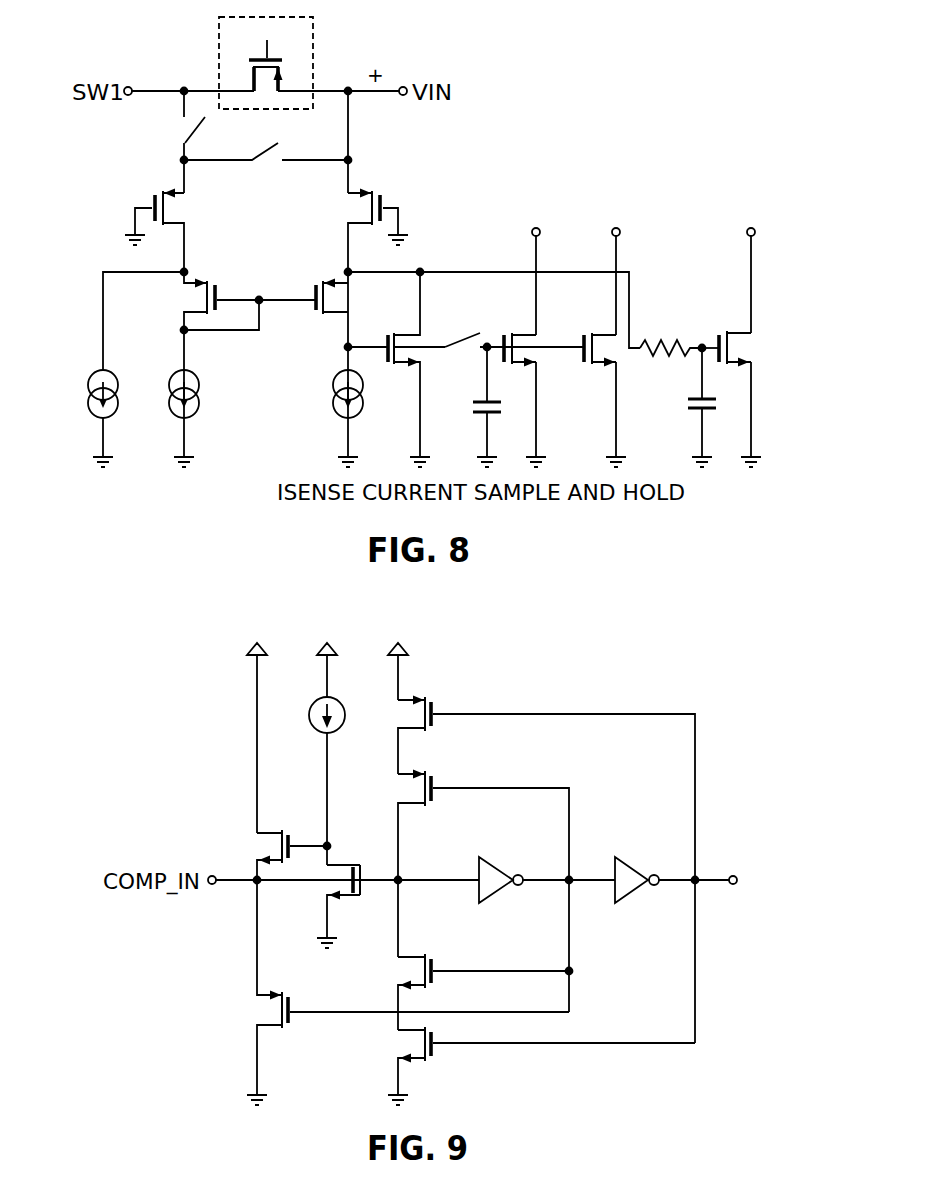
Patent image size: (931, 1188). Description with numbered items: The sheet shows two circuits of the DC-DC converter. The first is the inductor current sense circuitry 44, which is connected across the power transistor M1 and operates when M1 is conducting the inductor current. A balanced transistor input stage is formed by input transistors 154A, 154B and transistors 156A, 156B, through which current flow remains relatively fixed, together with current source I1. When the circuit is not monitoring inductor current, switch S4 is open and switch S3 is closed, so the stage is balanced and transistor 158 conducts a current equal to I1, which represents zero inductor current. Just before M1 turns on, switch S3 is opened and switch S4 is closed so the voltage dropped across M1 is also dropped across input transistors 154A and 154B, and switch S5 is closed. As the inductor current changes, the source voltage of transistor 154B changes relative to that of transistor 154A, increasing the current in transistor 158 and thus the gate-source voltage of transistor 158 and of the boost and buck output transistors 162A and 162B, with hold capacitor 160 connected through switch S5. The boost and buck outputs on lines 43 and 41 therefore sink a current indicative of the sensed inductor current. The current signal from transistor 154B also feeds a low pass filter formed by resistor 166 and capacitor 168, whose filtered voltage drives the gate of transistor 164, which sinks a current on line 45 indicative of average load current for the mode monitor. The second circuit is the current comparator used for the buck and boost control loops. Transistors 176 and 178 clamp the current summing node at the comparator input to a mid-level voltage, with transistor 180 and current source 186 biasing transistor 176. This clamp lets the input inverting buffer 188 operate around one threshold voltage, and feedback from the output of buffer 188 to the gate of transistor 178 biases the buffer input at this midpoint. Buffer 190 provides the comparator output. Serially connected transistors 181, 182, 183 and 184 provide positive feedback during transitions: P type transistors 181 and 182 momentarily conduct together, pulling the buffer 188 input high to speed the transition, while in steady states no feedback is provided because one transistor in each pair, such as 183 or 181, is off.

In FIG. 8, the transistor M1 is at (285, 52).
In FIG. 8, the switch S3 is at (268, 162).
In FIG. 8, the switch S4 is at (183, 128).
In FIG. 8, the switch S5 is at (472, 347).
In FIG. 8, the inductor current sense circuitry 44 is at (72, 196).
In FIG. 8, the input transistor 154A is at (168, 212).
In FIG. 8, the input transistor 154B is at (364, 212).
In FIG. 8, the transistor 156A is at (194, 300).
In FIG. 8, the transistor 156B is at (313, 288).
In FIG. 8, the transistor 158 is at (382, 338).
In FIG. 8, the hold capacitor 160 is at (486, 415).
In FIG. 8, the boost output transistor 162A is at (523, 334).
In FIG. 8, the buck output transistor 162B is at (605, 334).
In FIG. 8, the transistor 164 is at (742, 347).
In FIG. 8, the resistor 166 is at (663, 343).
In FIG. 8, the capacitor 168 is at (699, 418).
In FIG. 8, the current I1 is at (125, 369).
In FIG. 8, the line 43 is at (534, 256).
In FIG. 8, the line 41 is at (618, 254).
In FIG. 8, the line 45 is at (754, 290).
In FIG. 9, the transistor 176 is at (262, 851).
In FIG. 9, the transistor 178 is at (262, 1013).
In FIG. 9, the transistor 180 is at (340, 863).
In FIG. 9, the P type transistor 181 is at (410, 718).
In FIG. 9, the P type transistor 182 is at (410, 793).
In FIG. 9, the N type transistor 183 is at (410, 970).
In FIG. 9, the N type transistor 184 is at (410, 1045).
In FIG. 9, the current source 186 is at (323, 733).
In FIG. 9, the input inverting buffer 188 is at (501, 863).
In FIG. 9, the buffer 190 is at (637, 863).